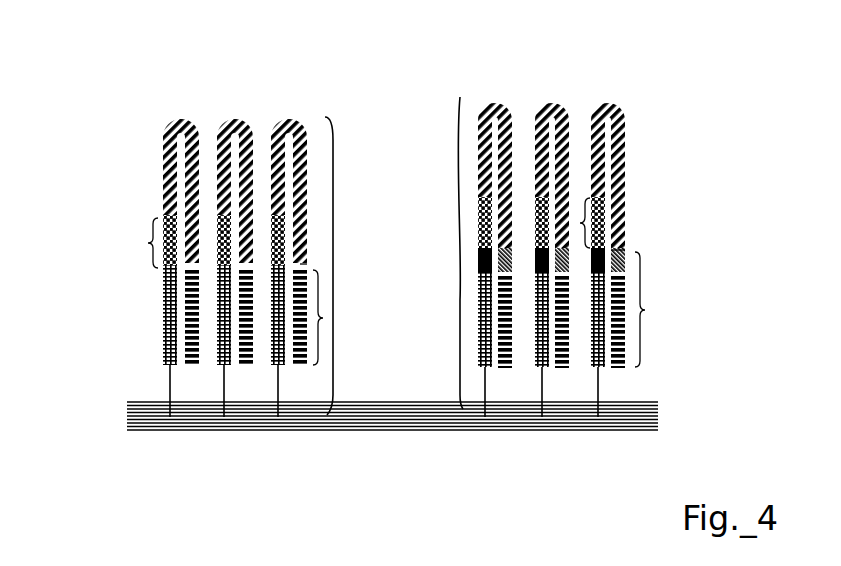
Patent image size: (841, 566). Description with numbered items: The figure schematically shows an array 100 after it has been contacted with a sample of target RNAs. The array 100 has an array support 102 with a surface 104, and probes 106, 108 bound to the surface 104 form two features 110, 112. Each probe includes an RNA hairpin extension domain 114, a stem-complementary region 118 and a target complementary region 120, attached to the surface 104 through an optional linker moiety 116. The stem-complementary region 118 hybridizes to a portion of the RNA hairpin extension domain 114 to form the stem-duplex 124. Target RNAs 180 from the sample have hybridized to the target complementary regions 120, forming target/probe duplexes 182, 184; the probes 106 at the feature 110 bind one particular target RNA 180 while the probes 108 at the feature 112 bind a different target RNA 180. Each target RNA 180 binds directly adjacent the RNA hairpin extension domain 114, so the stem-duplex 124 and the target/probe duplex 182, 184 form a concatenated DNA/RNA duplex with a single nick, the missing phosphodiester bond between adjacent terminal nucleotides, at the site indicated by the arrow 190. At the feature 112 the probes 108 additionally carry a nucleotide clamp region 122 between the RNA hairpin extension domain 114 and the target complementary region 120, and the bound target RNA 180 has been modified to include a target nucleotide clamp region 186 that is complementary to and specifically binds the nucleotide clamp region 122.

The array 100 is at (142, 66).
The array support 102 is at (128, 411).
The surface 104 is at (350, 420).
The probe 106 is at (333, 265).
The probe 108 is at (460, 255).
The feature 110 is at (143, 441).
The feature 112 is at (463, 441).
The RNA hairpin extension domain 114 is at (480, 144).
The linker moiety 116 is at (170, 380).
The stem-complementary region 118 is at (165, 230).
The target complementary region 120 is at (165, 284).
The nucleotide clamp region 122 is at (478, 262).
The stem-duplex 124 is at (148, 243).
The target RNA 180 is at (300, 347).
The target/probe duplex 182 is at (323, 318).
The target/probe duplex 184 is at (644, 310).
The target nucleotide clamp region 186 is at (633, 252).
The arrow 190 is at (320, 252).